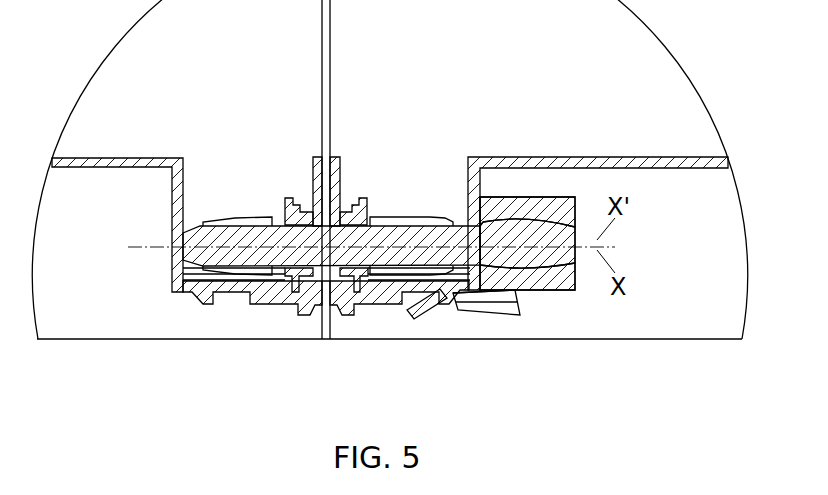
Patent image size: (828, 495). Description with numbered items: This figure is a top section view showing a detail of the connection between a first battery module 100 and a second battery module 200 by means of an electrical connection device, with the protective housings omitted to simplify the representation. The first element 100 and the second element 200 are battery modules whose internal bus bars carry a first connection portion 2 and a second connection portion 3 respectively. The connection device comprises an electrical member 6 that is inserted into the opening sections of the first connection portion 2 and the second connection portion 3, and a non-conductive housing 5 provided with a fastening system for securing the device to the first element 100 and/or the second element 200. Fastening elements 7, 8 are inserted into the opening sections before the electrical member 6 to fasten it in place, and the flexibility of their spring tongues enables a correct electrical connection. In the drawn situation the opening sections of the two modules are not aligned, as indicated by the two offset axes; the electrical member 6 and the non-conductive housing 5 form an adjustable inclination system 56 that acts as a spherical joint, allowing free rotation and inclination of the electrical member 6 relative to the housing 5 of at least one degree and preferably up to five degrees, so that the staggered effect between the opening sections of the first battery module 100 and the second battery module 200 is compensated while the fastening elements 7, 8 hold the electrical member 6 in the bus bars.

The first element 100 is at (130, 322).
The second element 200 is at (575, 322).
The first connection portion 2 is at (303, 212).
The second connection portion 3 is at (349, 212).
The non-conductive housing 5 is at (565, 208).
The adjustable inclination system 56 is at (528, 217).
The electrical member 6 is at (388, 235).
The fastening element 7 is at (237, 270).
The fastening element 8 is at (412, 276).